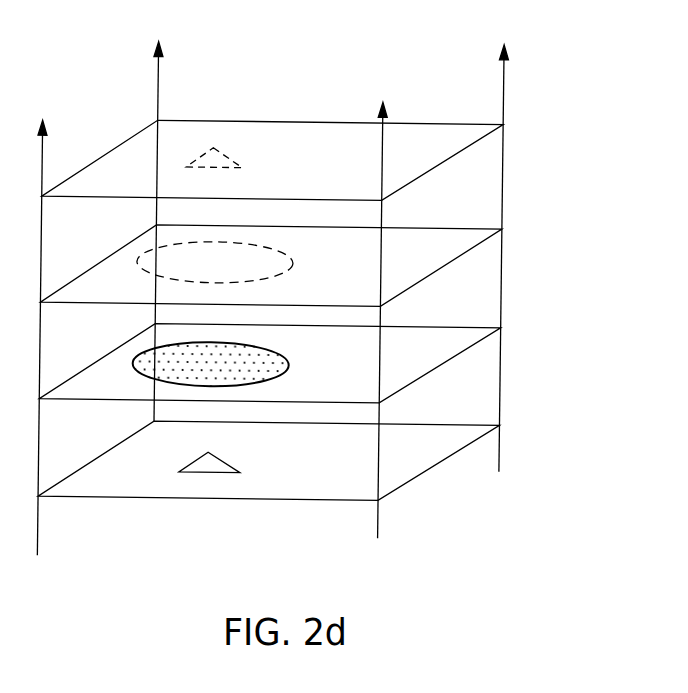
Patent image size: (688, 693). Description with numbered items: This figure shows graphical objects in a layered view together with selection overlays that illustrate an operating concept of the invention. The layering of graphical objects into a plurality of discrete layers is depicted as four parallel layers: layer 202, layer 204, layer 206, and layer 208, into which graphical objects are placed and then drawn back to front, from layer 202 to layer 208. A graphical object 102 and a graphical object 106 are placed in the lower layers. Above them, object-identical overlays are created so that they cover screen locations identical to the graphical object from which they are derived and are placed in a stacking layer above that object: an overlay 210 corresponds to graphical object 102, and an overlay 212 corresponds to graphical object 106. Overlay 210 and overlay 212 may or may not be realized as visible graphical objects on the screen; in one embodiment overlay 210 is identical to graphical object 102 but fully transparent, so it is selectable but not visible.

The layer 202 is at (403, 480).
The layer 204 is at (443, 345).
The layer 206 is at (465, 248).
The layer 208 is at (467, 143).
The graphical object 102 is at (270, 355).
The graphical object 106 is at (223, 460).
The overlay 210 is at (267, 247).
The overlay 212 is at (223, 155).